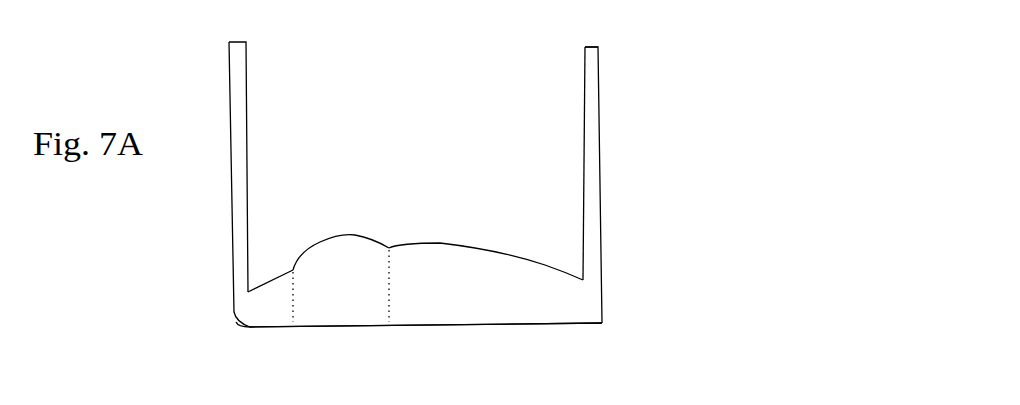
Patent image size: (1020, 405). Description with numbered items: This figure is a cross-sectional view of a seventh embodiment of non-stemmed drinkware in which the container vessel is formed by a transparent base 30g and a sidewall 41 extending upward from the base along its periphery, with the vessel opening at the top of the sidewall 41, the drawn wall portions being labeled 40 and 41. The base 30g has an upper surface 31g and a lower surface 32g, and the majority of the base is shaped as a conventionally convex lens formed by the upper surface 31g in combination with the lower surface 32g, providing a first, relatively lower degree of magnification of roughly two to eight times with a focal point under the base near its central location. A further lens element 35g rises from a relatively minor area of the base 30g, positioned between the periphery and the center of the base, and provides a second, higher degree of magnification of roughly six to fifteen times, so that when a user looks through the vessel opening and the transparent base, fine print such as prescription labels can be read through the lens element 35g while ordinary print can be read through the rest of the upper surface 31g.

The base 30g is at (537, 295).
The upper surface of the base 31g is at (545, 258).
The lower surface of the base 32g is at (533, 325).
The lens element 35g is at (345, 247).
The side wall / post 40 is at (593, 122).
The sidewall 41 is at (572, 42).